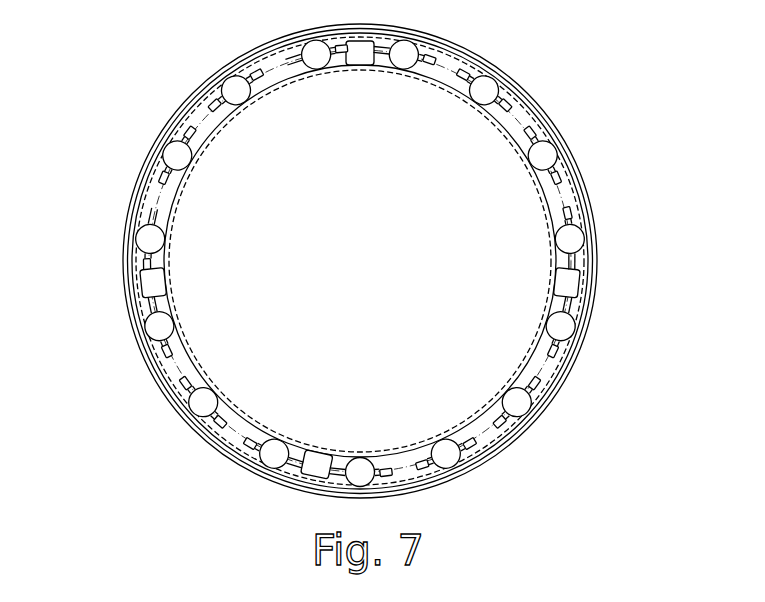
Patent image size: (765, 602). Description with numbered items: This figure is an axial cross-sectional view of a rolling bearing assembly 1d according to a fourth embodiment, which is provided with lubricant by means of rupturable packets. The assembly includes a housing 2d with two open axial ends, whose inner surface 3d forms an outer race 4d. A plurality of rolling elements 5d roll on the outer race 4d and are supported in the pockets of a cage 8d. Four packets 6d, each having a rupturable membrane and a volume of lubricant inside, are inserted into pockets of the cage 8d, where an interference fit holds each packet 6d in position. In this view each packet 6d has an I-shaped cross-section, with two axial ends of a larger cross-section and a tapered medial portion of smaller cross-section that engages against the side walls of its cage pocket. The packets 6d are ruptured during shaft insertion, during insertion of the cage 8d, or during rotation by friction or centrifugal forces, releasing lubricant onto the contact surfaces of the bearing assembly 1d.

The bearing assembly 1d is at (536, 73).
The housing 2d is at (570, 164).
The inner surface 3d is at (584, 280).
The outer race 4d is at (569, 368).
The rolling elements 5d is at (449, 455).
The packet 6d is at (152, 282).
The cage 8d is at (151, 354).